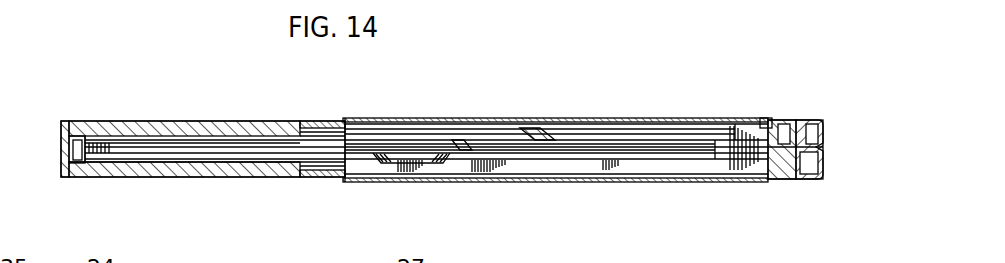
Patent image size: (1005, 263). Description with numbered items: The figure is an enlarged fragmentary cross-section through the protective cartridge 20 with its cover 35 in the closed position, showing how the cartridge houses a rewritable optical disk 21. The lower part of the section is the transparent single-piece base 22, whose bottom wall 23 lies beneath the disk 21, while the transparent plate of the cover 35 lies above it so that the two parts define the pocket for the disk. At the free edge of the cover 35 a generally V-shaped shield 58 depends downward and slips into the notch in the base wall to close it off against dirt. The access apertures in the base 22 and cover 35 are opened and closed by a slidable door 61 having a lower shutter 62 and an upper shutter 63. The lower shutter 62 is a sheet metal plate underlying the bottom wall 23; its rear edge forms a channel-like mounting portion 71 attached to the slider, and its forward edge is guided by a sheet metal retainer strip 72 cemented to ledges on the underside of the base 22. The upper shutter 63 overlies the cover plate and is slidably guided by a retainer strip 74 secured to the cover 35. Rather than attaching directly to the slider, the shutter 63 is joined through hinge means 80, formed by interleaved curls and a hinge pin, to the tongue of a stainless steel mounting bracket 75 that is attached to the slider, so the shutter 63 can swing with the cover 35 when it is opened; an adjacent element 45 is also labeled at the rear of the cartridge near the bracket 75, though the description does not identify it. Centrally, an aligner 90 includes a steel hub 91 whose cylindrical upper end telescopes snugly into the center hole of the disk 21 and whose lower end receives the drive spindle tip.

The protective cartridge 20 is at (176, 68).
The cover 35 is at (117, 110).
The retainer strip 74 is at (223, 123).
The shield 58 is at (62, 150).
The base 22 is at (165, 184).
The bottom wall 23 is at (195, 173).
The retainer strip 72 is at (250, 177).
The shutter 63 is at (453, 105).
The rewritable optical disk 21 is at (527, 148).
The hub 91 is at (405, 162).
The aligner 90 is at (462, 152).
The shutter 62 is at (563, 195).
The hinge means 80 is at (761, 104).
The end cap insert 45 is at (784, 105).
The mounting bracket 75 is at (822, 105).
The slidable door 61 is at (840, 143).
The mounting portion 71 is at (825, 160).